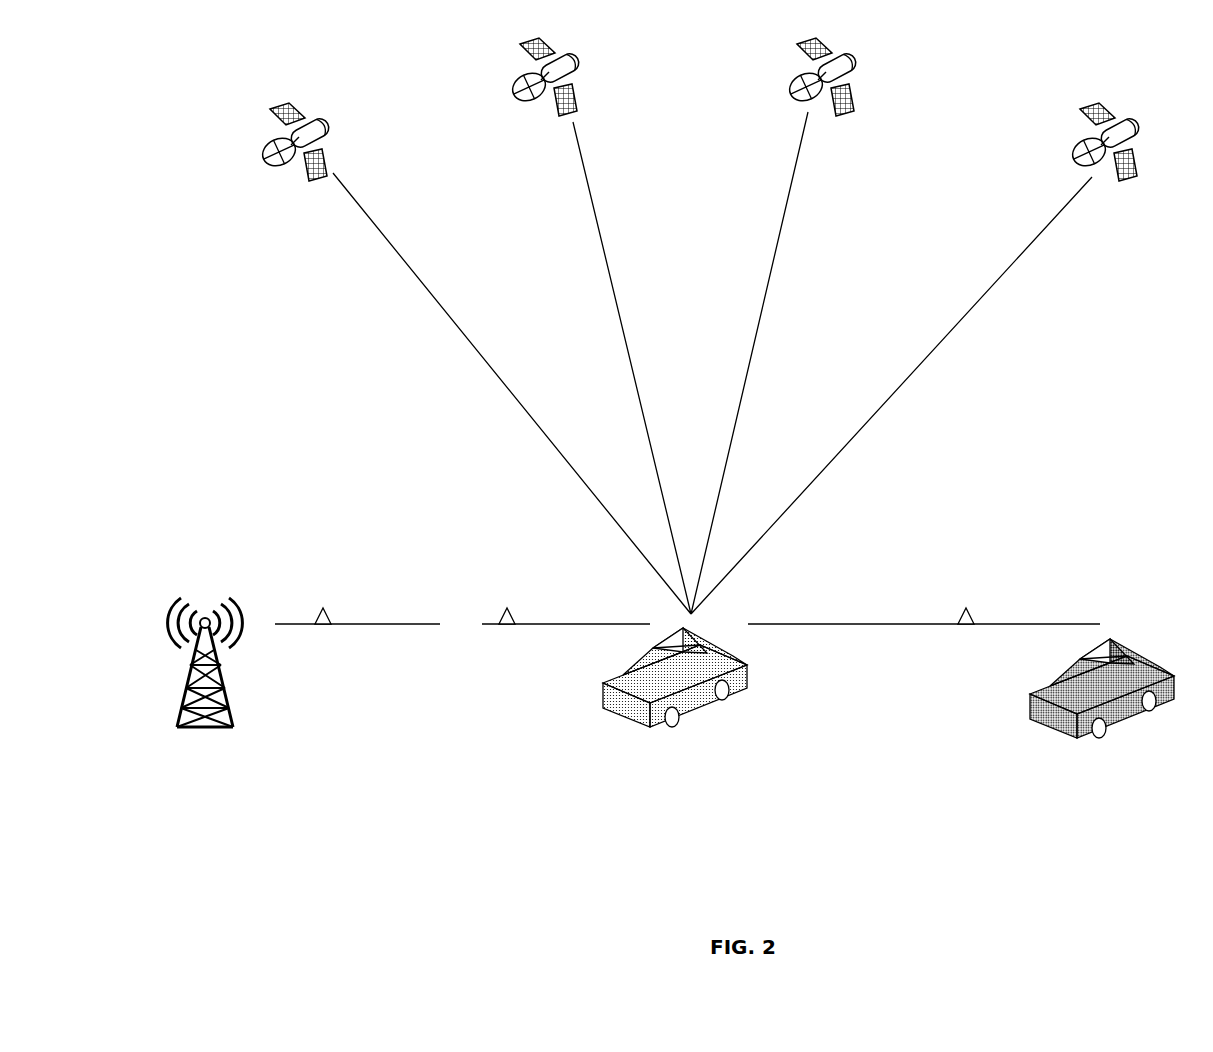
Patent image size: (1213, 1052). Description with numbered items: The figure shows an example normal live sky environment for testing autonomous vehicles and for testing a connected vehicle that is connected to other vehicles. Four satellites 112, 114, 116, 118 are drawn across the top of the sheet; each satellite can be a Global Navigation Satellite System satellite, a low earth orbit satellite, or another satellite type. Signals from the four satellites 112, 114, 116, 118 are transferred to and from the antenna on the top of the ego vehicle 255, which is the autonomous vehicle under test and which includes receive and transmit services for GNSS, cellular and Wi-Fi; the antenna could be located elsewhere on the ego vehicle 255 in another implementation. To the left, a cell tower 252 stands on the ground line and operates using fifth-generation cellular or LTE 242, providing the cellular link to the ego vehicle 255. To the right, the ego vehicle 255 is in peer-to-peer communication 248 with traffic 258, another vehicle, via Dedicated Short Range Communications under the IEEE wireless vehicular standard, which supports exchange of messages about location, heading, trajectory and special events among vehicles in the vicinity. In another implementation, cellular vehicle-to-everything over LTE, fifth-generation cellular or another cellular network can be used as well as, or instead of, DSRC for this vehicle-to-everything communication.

The satellite 112 is at (295, 161).
The satellite 114 is at (545, 95).
The satellite 116 is at (822, 95).
The satellite 118 is at (1105, 161).
The 5G or LTE 242 is at (357, 622).
The peer-to-peer communication 248 is at (924, 622).
The cell tower 252 is at (205, 682).
The ego vehicle 255 is at (675, 692).
The traffic 258 is at (1102, 701).